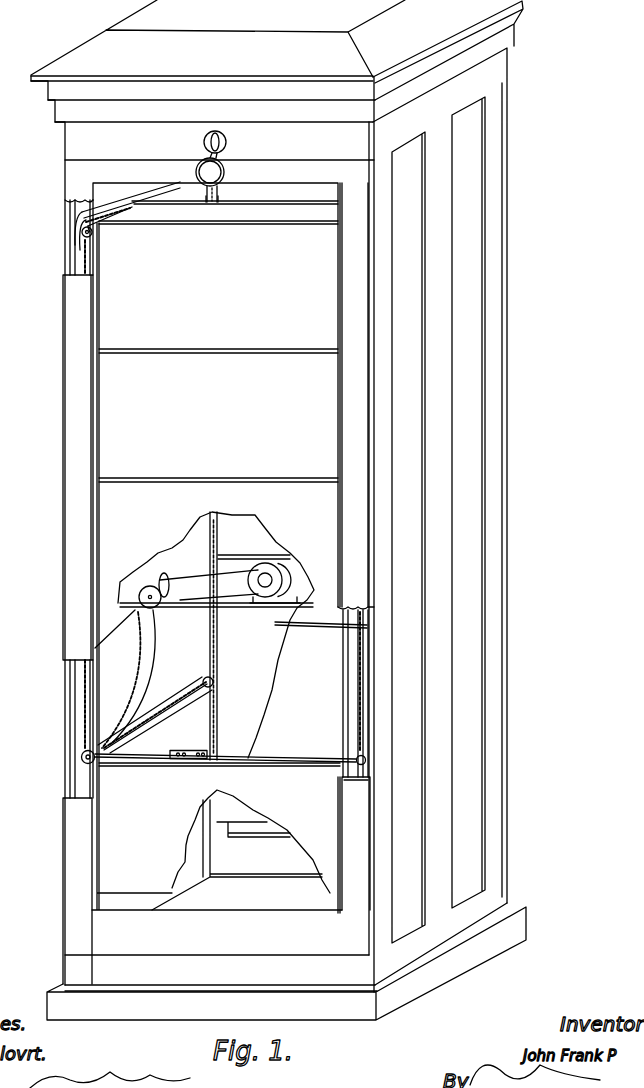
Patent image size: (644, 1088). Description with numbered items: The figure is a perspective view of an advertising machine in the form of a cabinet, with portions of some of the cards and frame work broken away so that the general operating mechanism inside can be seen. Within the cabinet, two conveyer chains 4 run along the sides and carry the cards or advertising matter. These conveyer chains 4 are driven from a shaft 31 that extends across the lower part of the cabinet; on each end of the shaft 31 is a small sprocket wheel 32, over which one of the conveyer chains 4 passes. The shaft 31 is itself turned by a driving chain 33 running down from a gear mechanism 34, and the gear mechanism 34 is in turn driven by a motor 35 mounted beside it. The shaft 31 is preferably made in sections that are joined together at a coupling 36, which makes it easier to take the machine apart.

The conveyer chain 4 is at (82, 690).
The shaft 31 is at (147, 756).
The sprocket wheel 32 is at (81, 759).
The driving chain 33 is at (143, 685).
The gear mechanism 34 is at (178, 593).
The motor 35 is at (270, 594).
The joint 36 is at (188, 758).